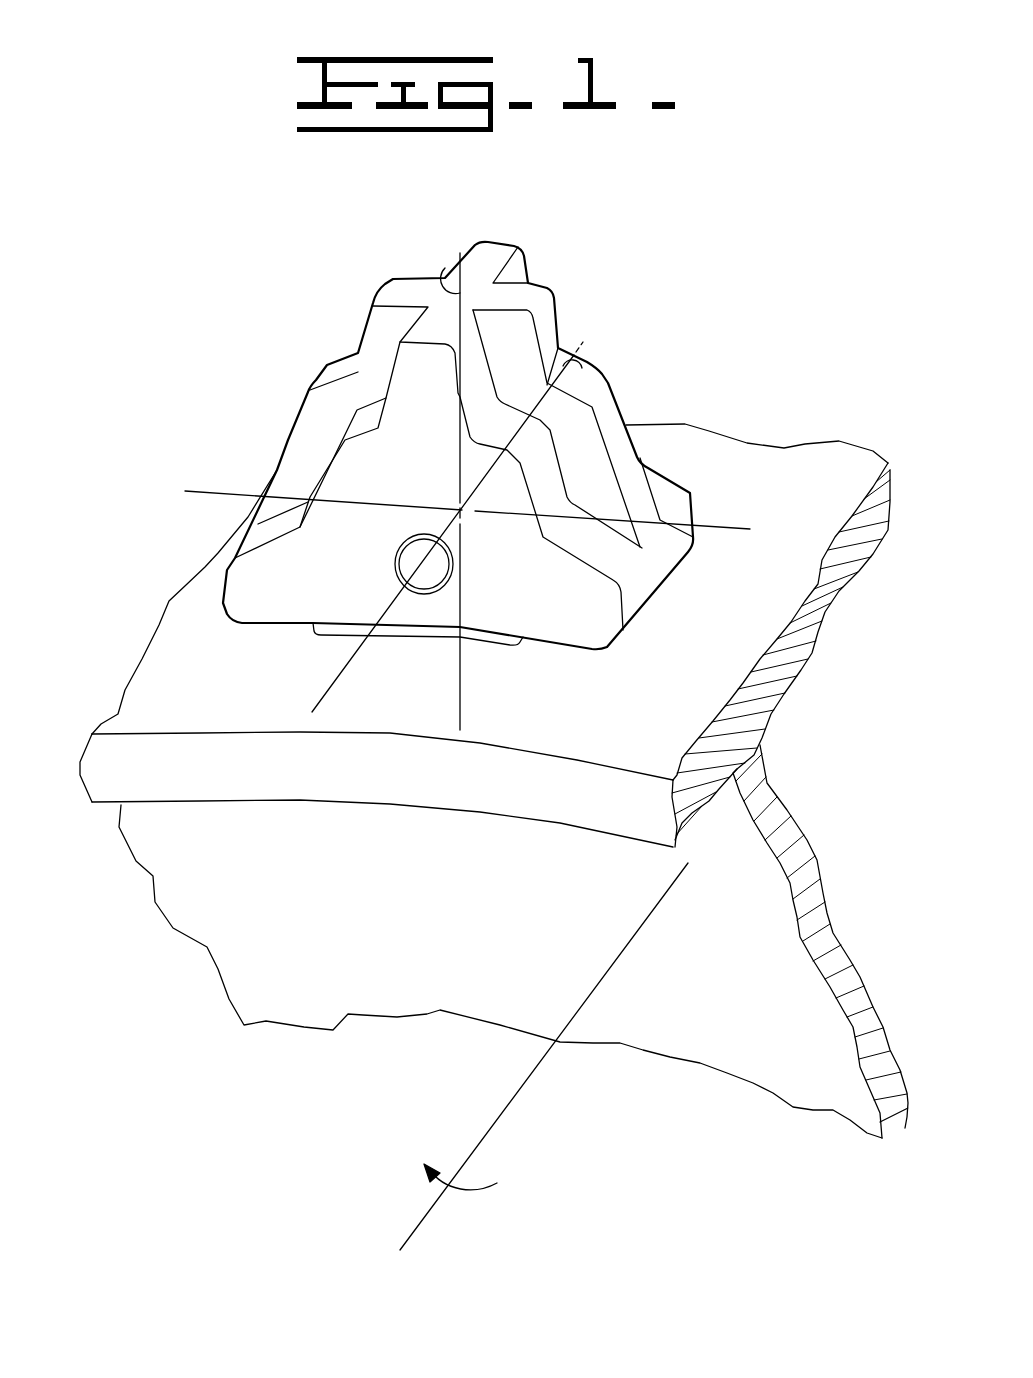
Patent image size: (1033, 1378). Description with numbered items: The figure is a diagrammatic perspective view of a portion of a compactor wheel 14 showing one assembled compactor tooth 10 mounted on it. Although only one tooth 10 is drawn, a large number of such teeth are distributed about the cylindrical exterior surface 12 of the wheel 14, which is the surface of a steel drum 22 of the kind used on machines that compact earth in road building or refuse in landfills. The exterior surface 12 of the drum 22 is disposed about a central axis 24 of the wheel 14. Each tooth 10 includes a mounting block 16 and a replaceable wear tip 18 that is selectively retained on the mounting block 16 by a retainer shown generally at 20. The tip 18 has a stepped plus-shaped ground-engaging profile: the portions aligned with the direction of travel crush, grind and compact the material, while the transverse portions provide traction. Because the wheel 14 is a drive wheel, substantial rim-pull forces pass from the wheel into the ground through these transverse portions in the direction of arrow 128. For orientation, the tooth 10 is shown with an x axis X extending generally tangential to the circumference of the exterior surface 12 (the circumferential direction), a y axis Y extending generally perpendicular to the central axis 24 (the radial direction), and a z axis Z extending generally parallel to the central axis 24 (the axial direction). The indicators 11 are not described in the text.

The compactor tooth 10 is at (552, 234).
The cutting edge direction indicators 11 is at (327, 518).
The cylindrical exterior surface 12 is at (790, 455).
The compactor wheel 14 is at (103, 838).
The mounting block 16 is at (412, 653).
The replaceable wear tip 18 is at (293, 400).
The retainer 20 is at (410, 565).
The steel drum 22 is at (851, 560).
The central axis 24 is at (650, 927).
The arrow 128 is at (240, 456).
The x axis X is at (198, 499).
The y axis Y is at (445, 262).
The z axis Z is at (583, 342).